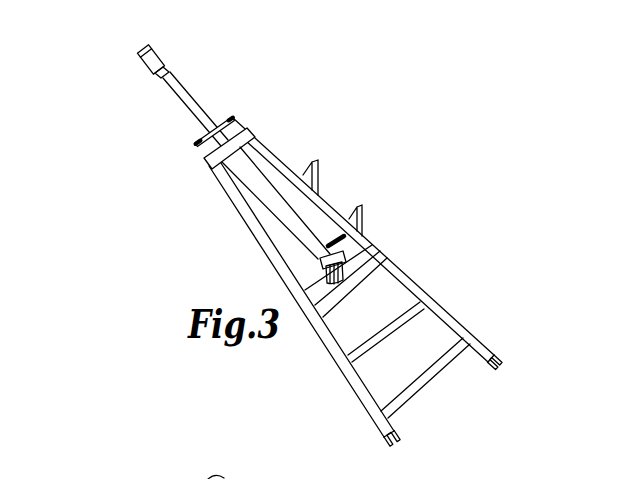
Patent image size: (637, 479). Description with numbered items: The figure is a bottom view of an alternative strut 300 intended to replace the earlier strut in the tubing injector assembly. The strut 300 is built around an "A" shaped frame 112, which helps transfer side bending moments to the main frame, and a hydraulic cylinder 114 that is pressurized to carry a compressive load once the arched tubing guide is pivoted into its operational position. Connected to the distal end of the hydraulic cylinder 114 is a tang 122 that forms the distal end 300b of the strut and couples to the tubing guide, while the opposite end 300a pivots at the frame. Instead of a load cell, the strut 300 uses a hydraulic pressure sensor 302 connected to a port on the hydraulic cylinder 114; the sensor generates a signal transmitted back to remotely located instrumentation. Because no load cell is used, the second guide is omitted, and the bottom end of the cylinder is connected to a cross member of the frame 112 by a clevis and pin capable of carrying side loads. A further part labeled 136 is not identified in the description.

The strut 300 is at (318, 252).
The first end of frame 300a is at (506, 340).
The second end of frame 300b is at (134, 82).
The "A" shaped frame 112 is at (417, 285).
The hydraulic cylinder 114 is at (192, 110).
The tang 122 is at (155, 60).
The hydraulic pressure sensor 302 is at (344, 237).
The cross member 136 is at (457, 478).